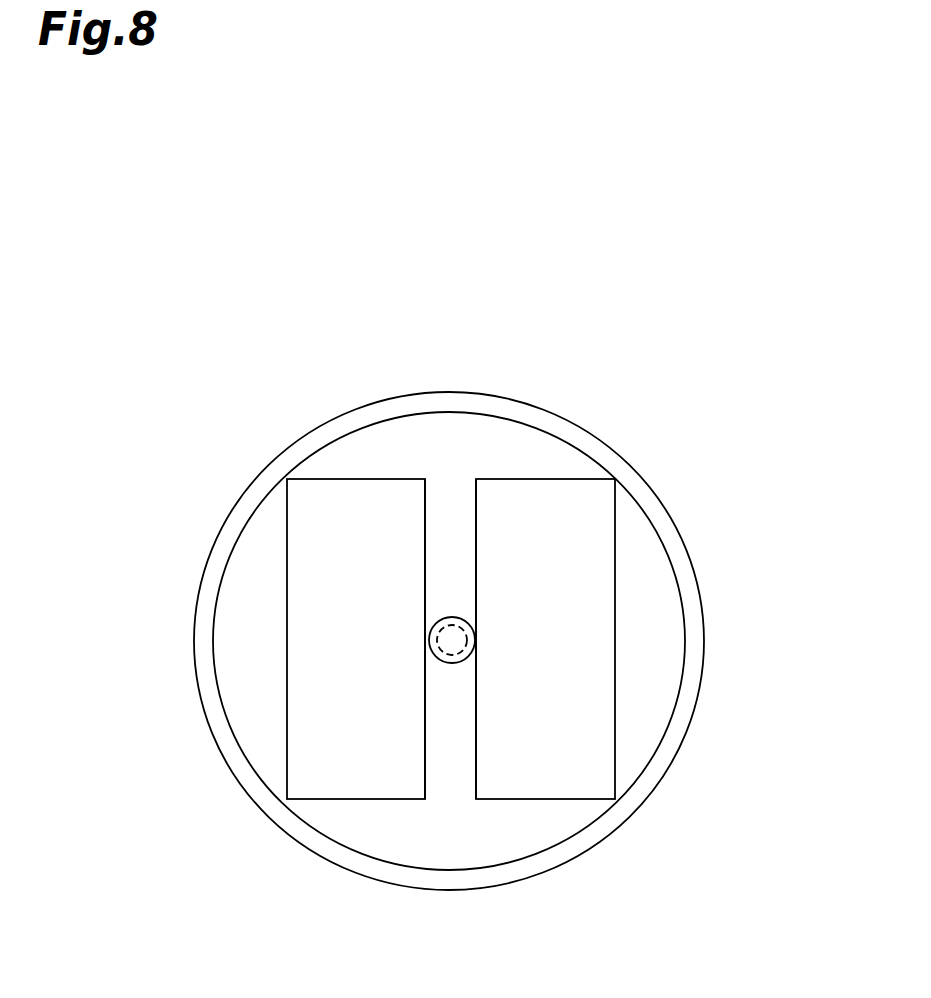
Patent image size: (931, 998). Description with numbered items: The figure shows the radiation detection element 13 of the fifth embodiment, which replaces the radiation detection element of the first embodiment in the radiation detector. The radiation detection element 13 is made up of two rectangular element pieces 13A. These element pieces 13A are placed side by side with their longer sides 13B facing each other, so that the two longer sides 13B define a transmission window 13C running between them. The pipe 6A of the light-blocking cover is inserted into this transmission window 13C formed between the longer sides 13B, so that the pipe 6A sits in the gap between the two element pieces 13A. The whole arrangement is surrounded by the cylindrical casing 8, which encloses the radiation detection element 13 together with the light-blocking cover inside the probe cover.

The casing 8 is at (557, 413).
The radiation detection element 13 is at (370, 467).
The element pieces 13A is at (313, 642).
The longer sides 13B is at (426, 527).
The transmission window 13C is at (452, 688).
The pipe 6A is at (443, 617).